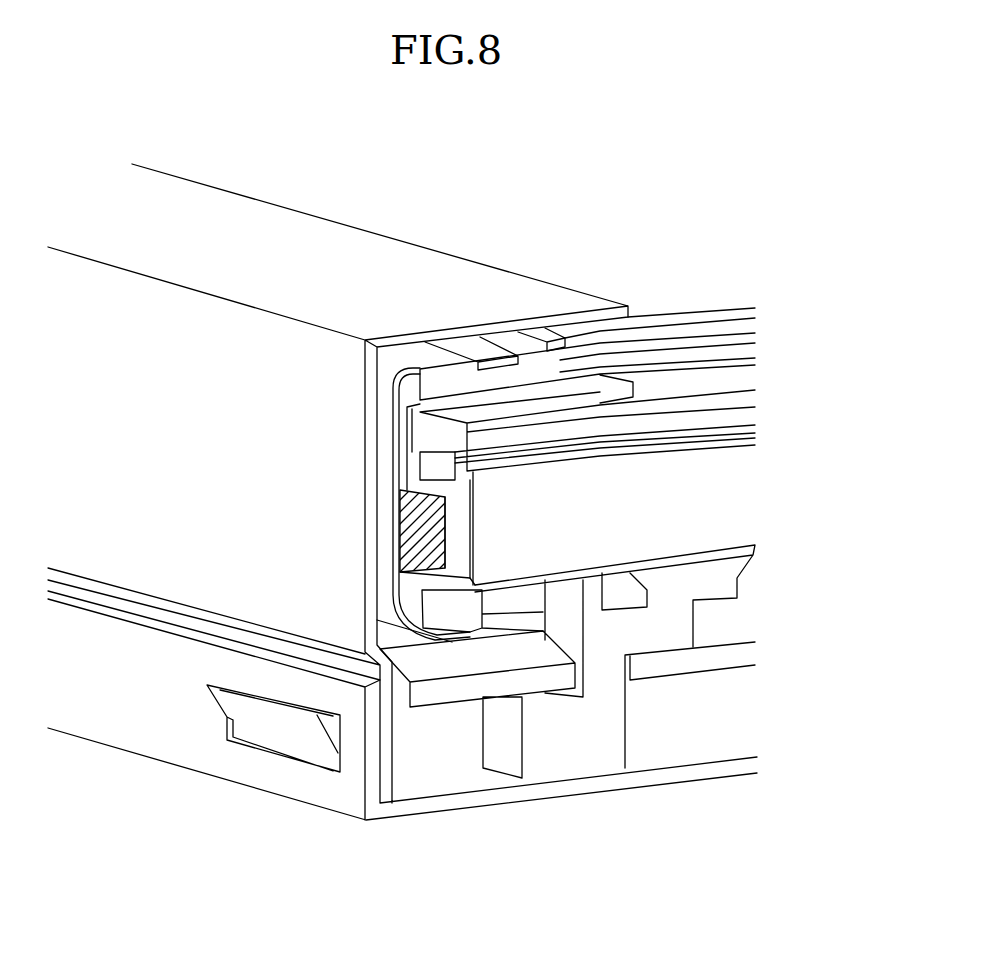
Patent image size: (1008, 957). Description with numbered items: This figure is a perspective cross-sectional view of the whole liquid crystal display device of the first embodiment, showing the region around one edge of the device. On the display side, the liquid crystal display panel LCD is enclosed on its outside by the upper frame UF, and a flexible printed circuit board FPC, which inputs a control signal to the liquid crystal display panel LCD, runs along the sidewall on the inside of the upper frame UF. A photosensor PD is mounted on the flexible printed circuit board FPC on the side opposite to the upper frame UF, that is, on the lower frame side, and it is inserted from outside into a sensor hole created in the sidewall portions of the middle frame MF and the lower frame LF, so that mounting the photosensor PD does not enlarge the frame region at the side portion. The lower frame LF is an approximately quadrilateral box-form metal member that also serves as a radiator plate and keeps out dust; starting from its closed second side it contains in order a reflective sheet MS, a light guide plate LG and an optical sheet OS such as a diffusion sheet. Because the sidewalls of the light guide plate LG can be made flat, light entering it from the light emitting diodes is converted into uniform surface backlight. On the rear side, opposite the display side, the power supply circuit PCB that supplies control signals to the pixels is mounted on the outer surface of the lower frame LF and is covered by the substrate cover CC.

The upper frame UF is at (348, 238).
The flexible printed circuit board FPC is at (390, 372).
The middle frame MF is at (405, 408).
The lower frame LF is at (435, 465).
The photosensor PD is at (420, 525).
The liquid crystal display panel LCD is at (763, 303).
The optical sheet OS is at (763, 383).
The light guide plate LG is at (735, 497).
The reflective sheet MS is at (742, 552).
The power supply circuit PCB is at (745, 653).
The substrate cover CC is at (143, 740).